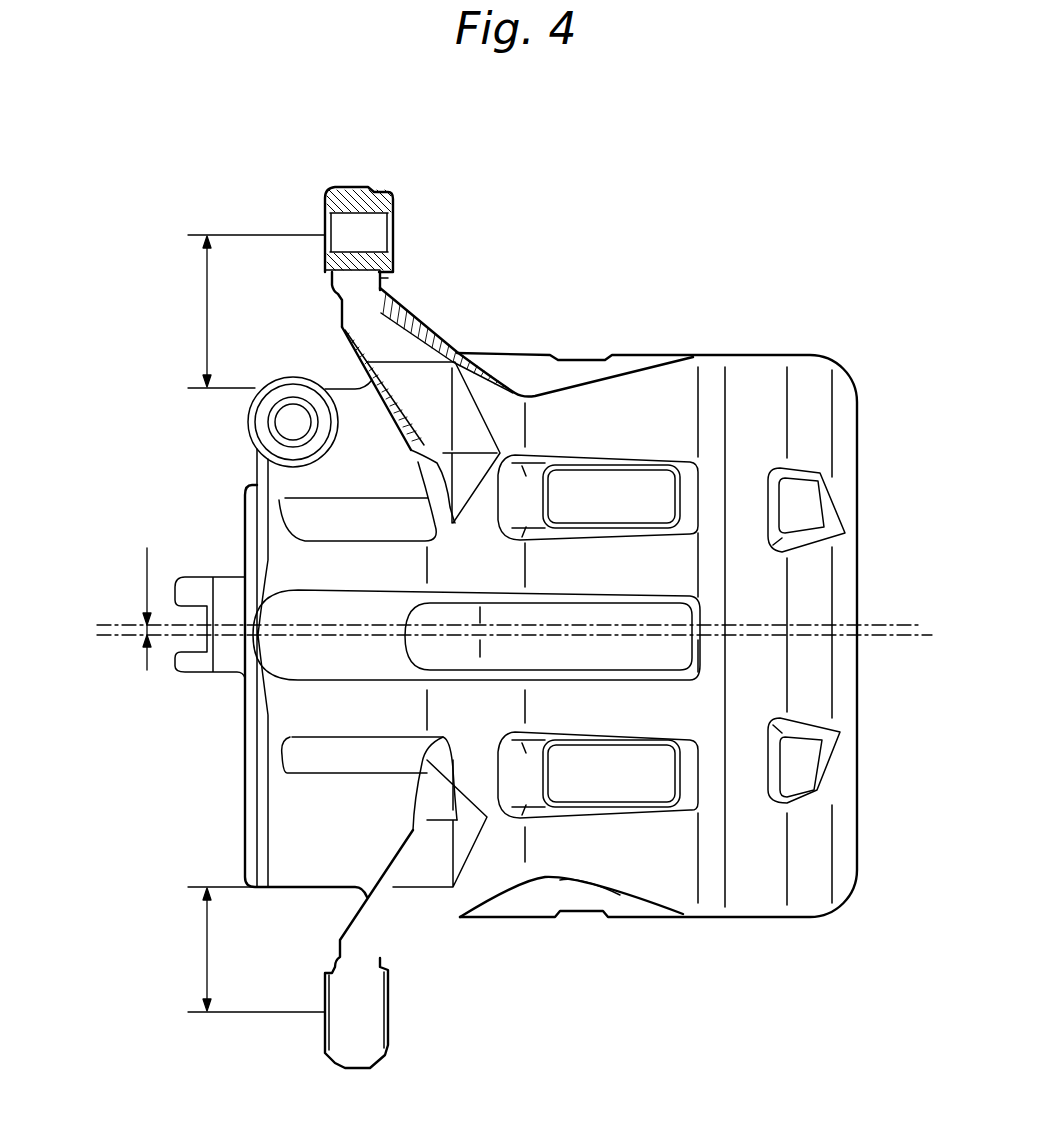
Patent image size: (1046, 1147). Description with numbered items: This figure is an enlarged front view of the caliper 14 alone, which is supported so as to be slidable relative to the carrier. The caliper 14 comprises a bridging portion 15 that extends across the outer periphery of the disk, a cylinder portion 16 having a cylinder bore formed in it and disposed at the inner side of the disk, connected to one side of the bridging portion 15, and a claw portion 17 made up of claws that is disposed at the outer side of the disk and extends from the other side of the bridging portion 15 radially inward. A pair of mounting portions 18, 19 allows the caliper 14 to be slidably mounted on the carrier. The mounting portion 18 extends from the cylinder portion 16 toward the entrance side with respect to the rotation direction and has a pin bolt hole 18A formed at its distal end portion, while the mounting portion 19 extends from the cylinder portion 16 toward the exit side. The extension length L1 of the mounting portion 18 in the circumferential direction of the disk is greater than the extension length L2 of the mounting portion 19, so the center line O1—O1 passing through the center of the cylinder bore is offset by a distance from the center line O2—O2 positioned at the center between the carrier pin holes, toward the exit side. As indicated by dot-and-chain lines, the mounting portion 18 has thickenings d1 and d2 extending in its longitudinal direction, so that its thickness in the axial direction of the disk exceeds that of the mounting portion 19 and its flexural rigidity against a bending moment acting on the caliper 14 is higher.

The caliper 14 is at (678, 345).
The bridging portion 15 is at (587, 872).
The cylinder portion 16 is at (280, 690).
The claw portion 17 is at (851, 774).
The mounting portion 18 is at (352, 298).
The pin bolt hole 18A is at (393, 232).
The mounting portion 19 is at (360, 1013).
The thickening d1 is at (428, 318).
The thickening d2 is at (353, 377).
The extension length L1 is at (242, 311).
The extension length L2 is at (241, 949).
The center line of cylinder bore O1 is at (512, 640).
The center line between pin holes O2 is at (508, 627).